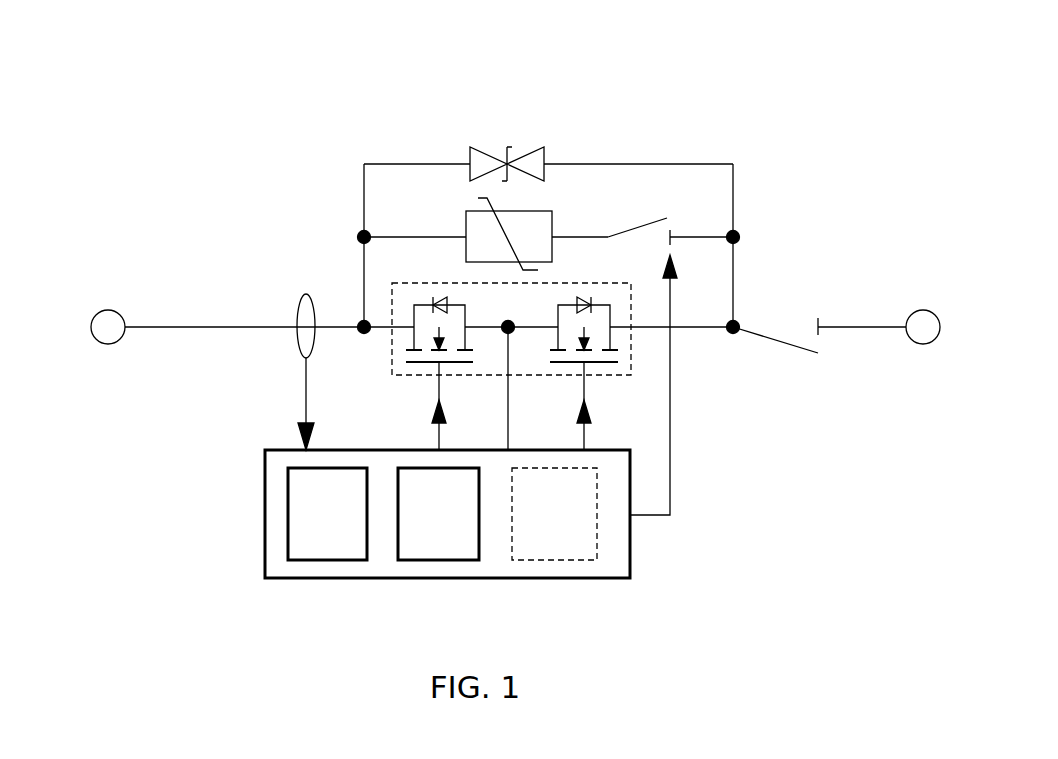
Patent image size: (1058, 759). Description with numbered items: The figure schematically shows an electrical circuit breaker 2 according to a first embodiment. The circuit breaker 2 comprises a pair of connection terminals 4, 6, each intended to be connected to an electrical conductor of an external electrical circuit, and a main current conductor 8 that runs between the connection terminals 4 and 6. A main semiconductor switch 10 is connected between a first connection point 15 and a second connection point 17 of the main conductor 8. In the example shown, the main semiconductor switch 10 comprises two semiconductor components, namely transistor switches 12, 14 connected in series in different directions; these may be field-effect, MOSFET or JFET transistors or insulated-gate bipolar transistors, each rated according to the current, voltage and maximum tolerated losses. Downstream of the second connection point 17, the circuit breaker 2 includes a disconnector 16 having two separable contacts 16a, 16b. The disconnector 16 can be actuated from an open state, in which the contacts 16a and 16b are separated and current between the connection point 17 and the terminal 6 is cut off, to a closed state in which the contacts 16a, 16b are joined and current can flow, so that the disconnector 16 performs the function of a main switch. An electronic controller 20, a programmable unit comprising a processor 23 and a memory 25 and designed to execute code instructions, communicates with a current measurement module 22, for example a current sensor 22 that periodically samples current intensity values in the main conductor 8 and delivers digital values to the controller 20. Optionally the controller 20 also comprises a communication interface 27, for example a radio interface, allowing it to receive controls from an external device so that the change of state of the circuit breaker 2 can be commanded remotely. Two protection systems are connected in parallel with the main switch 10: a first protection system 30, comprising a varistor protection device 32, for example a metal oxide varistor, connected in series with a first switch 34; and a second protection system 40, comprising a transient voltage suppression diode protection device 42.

The electrical circuit breaker 2 is at (840, 150).
The connection terminal 4 is at (95, 340).
The connection terminal 6 is at (925, 310).
The main current conductor 8 is at (167, 327).
The main semiconductor switch 10 is at (631, 357).
The transistor switch 12 is at (418, 365).
The transistor switch 14 is at (566, 365).
The first connection point 15 is at (358, 320).
The disconnector 16 is at (819, 300).
The separable contact 16a is at (818, 353).
The separable contact 16b is at (818, 318).
The second connection point 17 is at (740, 320).
The electronic controller 20 is at (265, 530).
The current measurement module 22 is at (296, 318).
The processor 23 is at (313, 530).
The memory 25 is at (424, 530).
The communication interface 27 is at (541, 530).
The first protection system 30 is at (708, 228).
The varistor protection device 32 is at (466, 222).
The first switch 34 is at (630, 228).
The second protection system 40 is at (390, 140).
The TVS diode protection device 42 is at (487, 157).